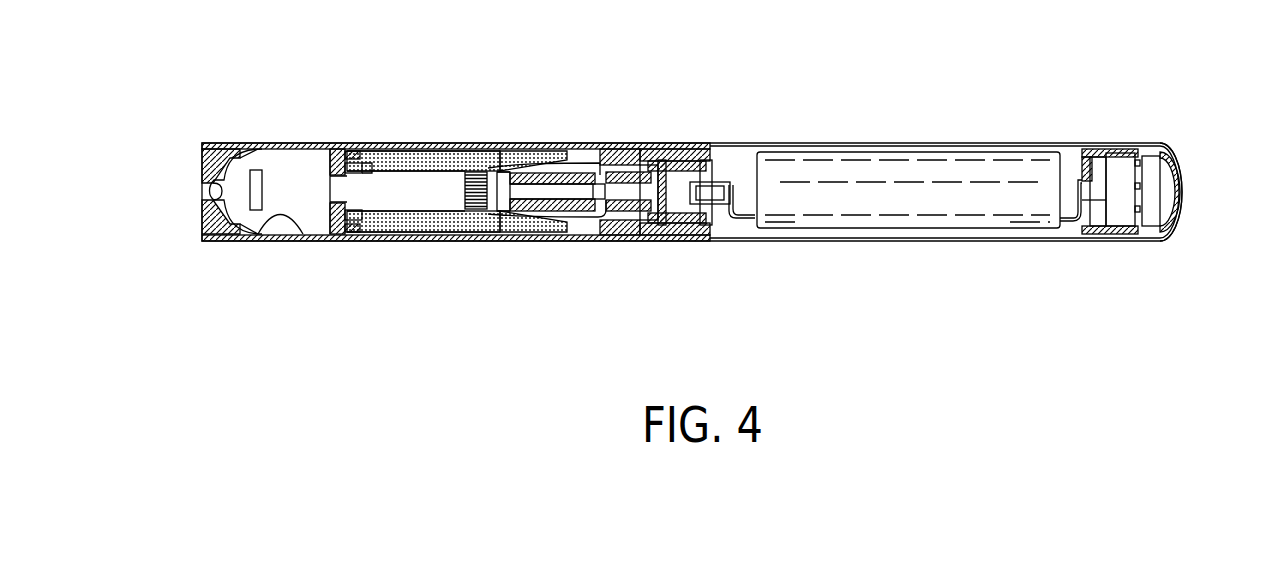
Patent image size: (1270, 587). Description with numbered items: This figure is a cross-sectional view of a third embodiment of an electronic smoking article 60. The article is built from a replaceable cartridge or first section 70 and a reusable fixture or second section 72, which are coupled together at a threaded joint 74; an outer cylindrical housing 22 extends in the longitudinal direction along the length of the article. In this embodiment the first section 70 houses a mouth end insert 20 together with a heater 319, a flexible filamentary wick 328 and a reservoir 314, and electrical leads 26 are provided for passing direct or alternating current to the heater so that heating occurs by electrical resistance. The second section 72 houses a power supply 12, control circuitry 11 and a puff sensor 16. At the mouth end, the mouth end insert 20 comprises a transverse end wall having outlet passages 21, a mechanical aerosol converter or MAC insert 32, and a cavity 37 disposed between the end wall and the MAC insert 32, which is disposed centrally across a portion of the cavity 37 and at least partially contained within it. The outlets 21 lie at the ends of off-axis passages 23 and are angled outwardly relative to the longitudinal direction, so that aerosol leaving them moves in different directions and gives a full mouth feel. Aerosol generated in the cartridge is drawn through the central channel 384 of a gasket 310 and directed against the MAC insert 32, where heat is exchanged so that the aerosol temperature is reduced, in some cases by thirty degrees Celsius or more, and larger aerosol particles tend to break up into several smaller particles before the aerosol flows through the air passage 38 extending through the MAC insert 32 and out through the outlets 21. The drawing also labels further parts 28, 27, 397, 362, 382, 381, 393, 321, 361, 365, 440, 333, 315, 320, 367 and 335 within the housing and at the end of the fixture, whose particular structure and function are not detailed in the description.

The electronic smoking article 60 is at (836, 90).
The outer cylindrical housing 22 is at (850, 143).
The reusable fixture 72 is at (920, 135).
The power supply 12 is at (1020, 162).
The puff sensor 16 is at (1117, 162).
The end cap 28 is at (1188, 166).
The light emitting element 27 is at (1168, 202).
The control circuitry 11 is at (1105, 207).
The mouth end insert 20 is at (212, 143).
The outlet passage 21 is at (212, 212).
The off-axis passages 23 is at (214, 243).
The MAC insert 32 is at (266, 178).
The cavity 37 is at (234, 243).
The air passage 38 is at (272, 220).
The airflow groove 397 is at (254, 226).
The central channel 384 is at (338, 228).
The gasket 310 is at (358, 234).
The liquid storage cotton 362 is at (415, 222).
The sealing ring 382 is at (351, 150).
The sealing groove 381 is at (333, 136).
The replaceable cartridge 70 is at (364, 130).
The air guide tube 393 is at (377, 150).
The reservoir 314 is at (393, 163).
The heater 319 is at (463, 172).
The air channel 321 is at (430, 200).
The flexible filamentary wick 328 is at (496, 172).
The sleeve wall 361 is at (553, 175).
The electrical leads 26 is at (565, 163).
The conductive ring 365 is at (584, 134).
The insulating ring 440 is at (624, 150).
The electrode post 333 is at (663, 155).
The conductive sleeve 315 is at (500, 225).
The insulating sleeve 320 is at (548, 212).
The base 367 is at (600, 250).
The electrode 335 is at (621, 225).
The threaded joint 74 is at (685, 243).